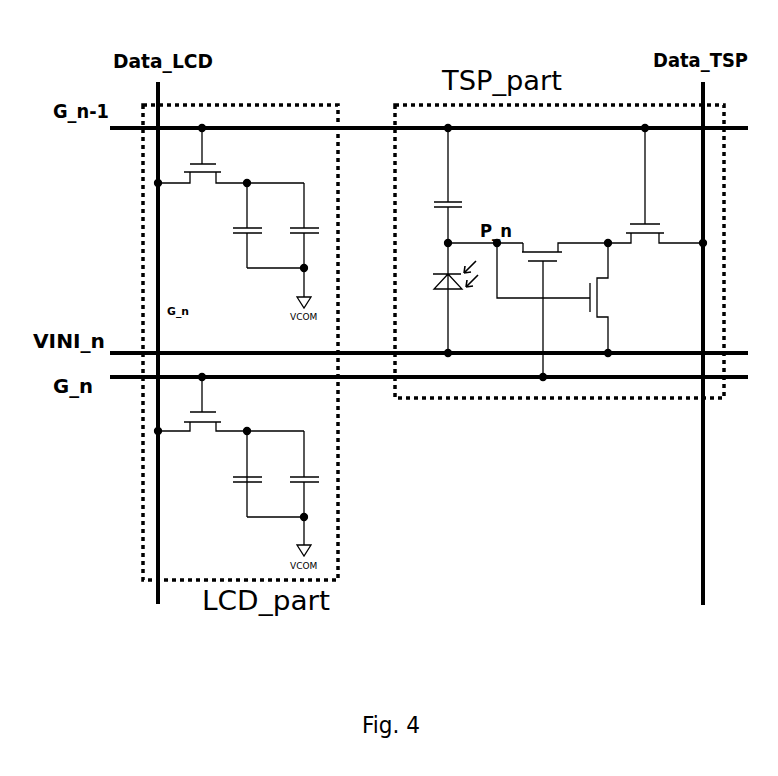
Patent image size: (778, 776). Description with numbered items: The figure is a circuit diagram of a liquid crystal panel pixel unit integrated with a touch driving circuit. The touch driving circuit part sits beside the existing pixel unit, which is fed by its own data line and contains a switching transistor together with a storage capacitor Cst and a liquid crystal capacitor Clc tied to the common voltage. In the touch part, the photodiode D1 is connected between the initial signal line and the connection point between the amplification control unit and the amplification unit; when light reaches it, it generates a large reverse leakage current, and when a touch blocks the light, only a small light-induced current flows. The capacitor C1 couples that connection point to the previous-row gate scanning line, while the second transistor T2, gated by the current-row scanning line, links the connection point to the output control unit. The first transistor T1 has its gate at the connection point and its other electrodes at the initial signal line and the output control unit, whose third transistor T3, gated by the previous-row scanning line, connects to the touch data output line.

The capacitor C1 is at (457, 184).
The photodiode D1 is at (444, 300).
The first transistor T1 is at (561, 300).
The second transistor T2 is at (565, 304).
The third transistor T3 is at (655, 192).
The storage capacitor Cst is at (237, 350).
The liquid crystal capacitor Clc is at (294, 350).